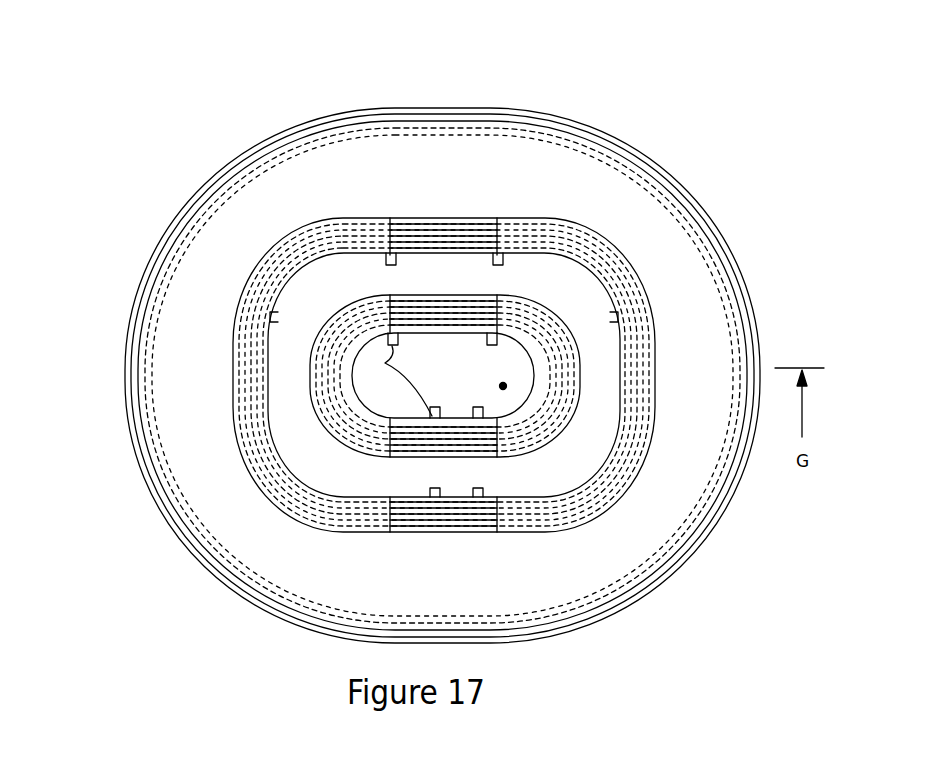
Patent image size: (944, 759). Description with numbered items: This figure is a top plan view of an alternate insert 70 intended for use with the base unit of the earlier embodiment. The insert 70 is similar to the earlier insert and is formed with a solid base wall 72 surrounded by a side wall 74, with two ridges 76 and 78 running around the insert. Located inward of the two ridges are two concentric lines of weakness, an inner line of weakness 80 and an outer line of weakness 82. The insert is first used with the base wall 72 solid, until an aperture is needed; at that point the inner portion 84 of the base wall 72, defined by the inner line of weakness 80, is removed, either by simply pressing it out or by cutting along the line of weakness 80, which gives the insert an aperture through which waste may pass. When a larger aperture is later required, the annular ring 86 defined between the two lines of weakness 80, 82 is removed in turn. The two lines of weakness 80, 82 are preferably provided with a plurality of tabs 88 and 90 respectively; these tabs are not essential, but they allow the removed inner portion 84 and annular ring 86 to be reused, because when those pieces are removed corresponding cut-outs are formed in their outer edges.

The insert 70 is at (620, 101).
The solid base wall 72 is at (602, 562).
The side wall 74 is at (760, 338).
The ridge 76 is at (628, 427).
The ridge 78 is at (565, 330).
The inner line of weakness 80 is at (534, 375).
The outer line of weakness 82 is at (570, 265).
The inner portion 84 is at (503, 386).
The annular ring 86 is at (345, 468).
The tabs 88 is at (385, 363).
The tabs 90 is at (393, 255).